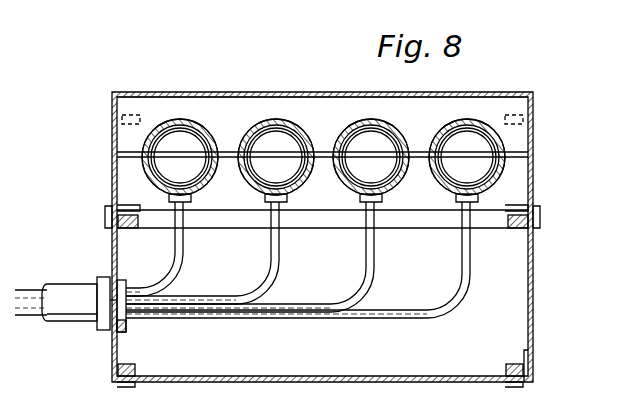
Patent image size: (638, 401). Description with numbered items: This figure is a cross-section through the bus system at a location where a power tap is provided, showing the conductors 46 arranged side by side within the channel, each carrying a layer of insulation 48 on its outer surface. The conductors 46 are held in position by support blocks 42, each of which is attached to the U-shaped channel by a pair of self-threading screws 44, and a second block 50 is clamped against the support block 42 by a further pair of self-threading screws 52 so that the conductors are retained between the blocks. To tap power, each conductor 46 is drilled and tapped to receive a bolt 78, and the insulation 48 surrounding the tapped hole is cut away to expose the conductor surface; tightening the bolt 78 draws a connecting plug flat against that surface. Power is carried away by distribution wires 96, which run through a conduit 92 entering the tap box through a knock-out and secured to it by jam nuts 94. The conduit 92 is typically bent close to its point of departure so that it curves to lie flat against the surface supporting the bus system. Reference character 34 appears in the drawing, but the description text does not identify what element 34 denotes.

The housing 34 is at (322, 95).
The support block 42 is at (240, 108).
The self-threading screws 44 is at (113, 122).
The conductors 46 is at (292, 118).
The layer of insulation 48 is at (182, 119).
The second block 50 is at (128, 172).
The self-threading screws 52 is at (122, 209).
The bolt 78 is at (168, 198).
The conduit 92 is at (75, 320).
The jam nuts 94 is at (100, 278).
The distribution wires 96 is at (180, 265).